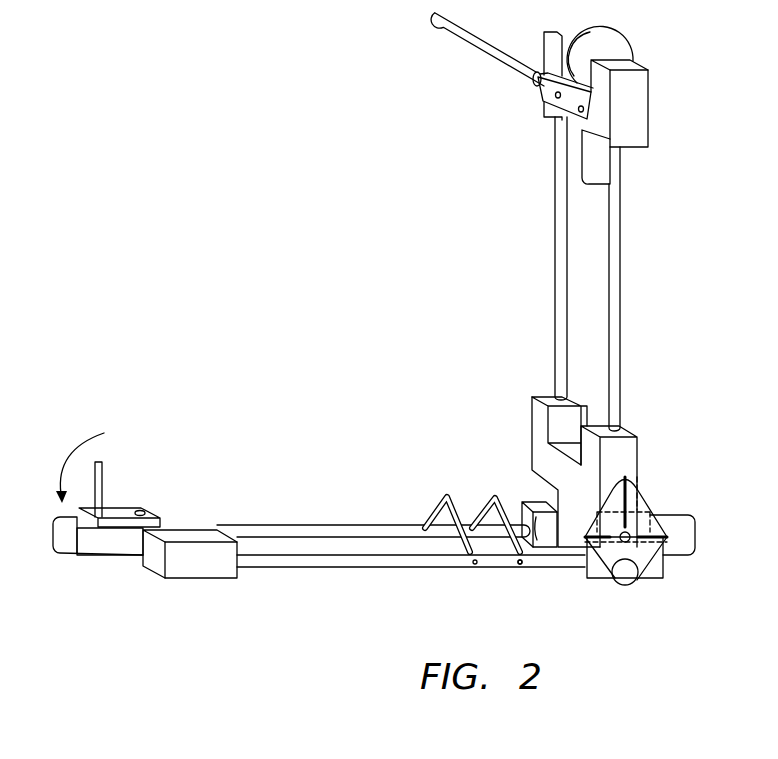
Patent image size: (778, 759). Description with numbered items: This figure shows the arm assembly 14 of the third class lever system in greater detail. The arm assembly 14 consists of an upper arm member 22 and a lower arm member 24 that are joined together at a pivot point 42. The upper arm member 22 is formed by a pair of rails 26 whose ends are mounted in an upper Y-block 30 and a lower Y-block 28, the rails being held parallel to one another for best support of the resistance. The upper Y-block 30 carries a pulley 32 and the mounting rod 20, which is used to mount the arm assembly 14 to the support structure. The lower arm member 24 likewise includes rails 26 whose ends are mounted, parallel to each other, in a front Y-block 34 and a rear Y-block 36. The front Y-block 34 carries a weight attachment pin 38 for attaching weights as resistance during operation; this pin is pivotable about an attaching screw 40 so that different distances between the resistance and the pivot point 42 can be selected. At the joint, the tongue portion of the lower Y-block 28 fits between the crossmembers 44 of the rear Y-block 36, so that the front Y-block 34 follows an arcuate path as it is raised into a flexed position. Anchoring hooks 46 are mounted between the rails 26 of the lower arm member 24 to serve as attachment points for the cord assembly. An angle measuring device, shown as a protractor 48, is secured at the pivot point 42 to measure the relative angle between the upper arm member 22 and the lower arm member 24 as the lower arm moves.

The arm assembly 14 is at (434, 264).
The mounting rod 20 is at (483, 50).
The upper arm member 22 is at (647, 264).
The lower arm member 24 is at (400, 591).
The rails 26 is at (560, 339).
The lower Y-block 28 is at (628, 457).
The upper Y-block 30 is at (640, 112).
The pulley 32 is at (607, 38).
The front Y-block 34 is at (187, 568).
The rear Y-block 36 is at (598, 576).
The weight attachment pin 38 is at (105, 465).
The attaching screw 40 is at (144, 508).
The pivot point 42 is at (552, 565).
The crossmembers 44 is at (553, 568).
The anchoring hooks 46 is at (494, 497).
The protractor 48 is at (643, 556).